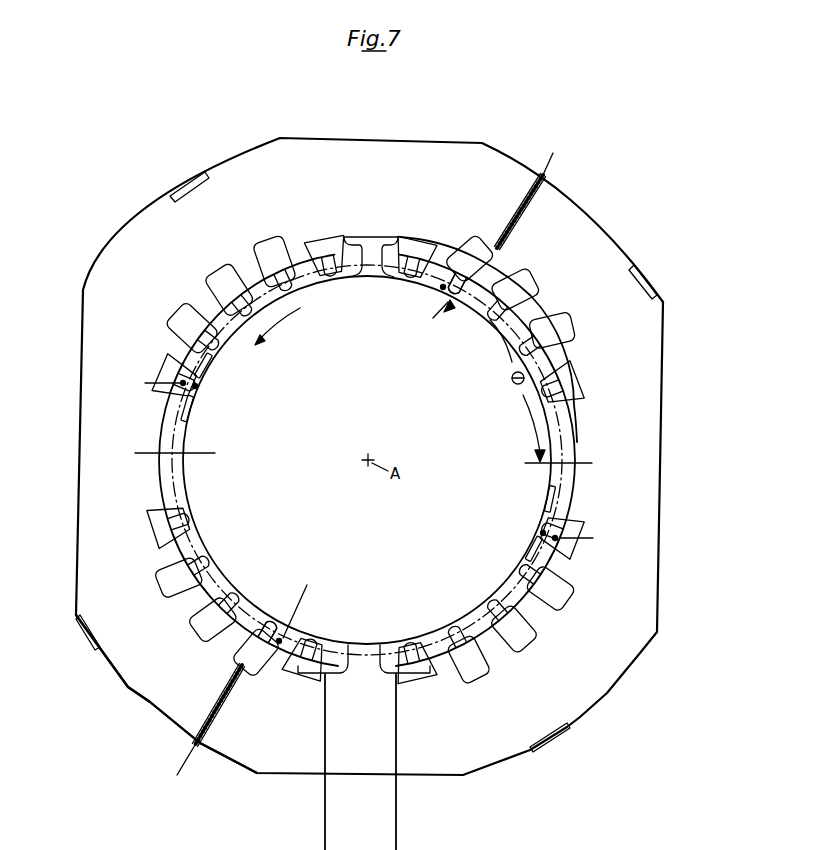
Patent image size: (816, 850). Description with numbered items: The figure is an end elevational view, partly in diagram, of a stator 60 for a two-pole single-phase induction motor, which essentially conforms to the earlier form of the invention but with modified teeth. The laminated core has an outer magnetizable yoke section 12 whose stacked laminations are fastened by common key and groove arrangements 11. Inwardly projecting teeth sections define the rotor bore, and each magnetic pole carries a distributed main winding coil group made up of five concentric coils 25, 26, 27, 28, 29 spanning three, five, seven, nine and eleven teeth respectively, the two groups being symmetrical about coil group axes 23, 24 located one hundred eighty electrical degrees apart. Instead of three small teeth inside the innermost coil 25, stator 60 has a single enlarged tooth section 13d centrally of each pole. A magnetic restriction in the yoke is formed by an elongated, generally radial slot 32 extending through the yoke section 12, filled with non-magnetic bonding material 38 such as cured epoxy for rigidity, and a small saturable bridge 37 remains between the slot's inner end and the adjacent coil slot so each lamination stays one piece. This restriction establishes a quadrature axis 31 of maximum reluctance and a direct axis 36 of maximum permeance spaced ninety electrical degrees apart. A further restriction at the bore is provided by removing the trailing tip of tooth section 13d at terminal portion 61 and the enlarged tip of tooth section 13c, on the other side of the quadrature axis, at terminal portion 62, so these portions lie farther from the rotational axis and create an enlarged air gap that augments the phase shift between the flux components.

The key and groove arrangements 11 is at (180, 183).
The yoke section 12 is at (607, 224).
The tooth section 13c is at (183, 353).
The enlarged tooth section 13d is at (168, 470).
The coil group axis 23 is at (137, 452).
The coil group axis 24 is at (593, 465).
The coil 25 is at (173, 395).
The coil 26 is at (205, 322).
The coil 27 is at (243, 282).
The coil 28 is at (289, 266).
The coil 29 is at (333, 248).
The quadrature axis 31 is at (198, 387).
The slot 32 is at (522, 200).
The direct axis 36 is at (443, 286).
The saturable bridge 37 is at (493, 244).
The non-magnetic bonding material 38 is at (523, 213).
The stator 60 is at (135, 753).
The terminal portion 61 is at (193, 412).
The terminal portion 62 is at (215, 366).